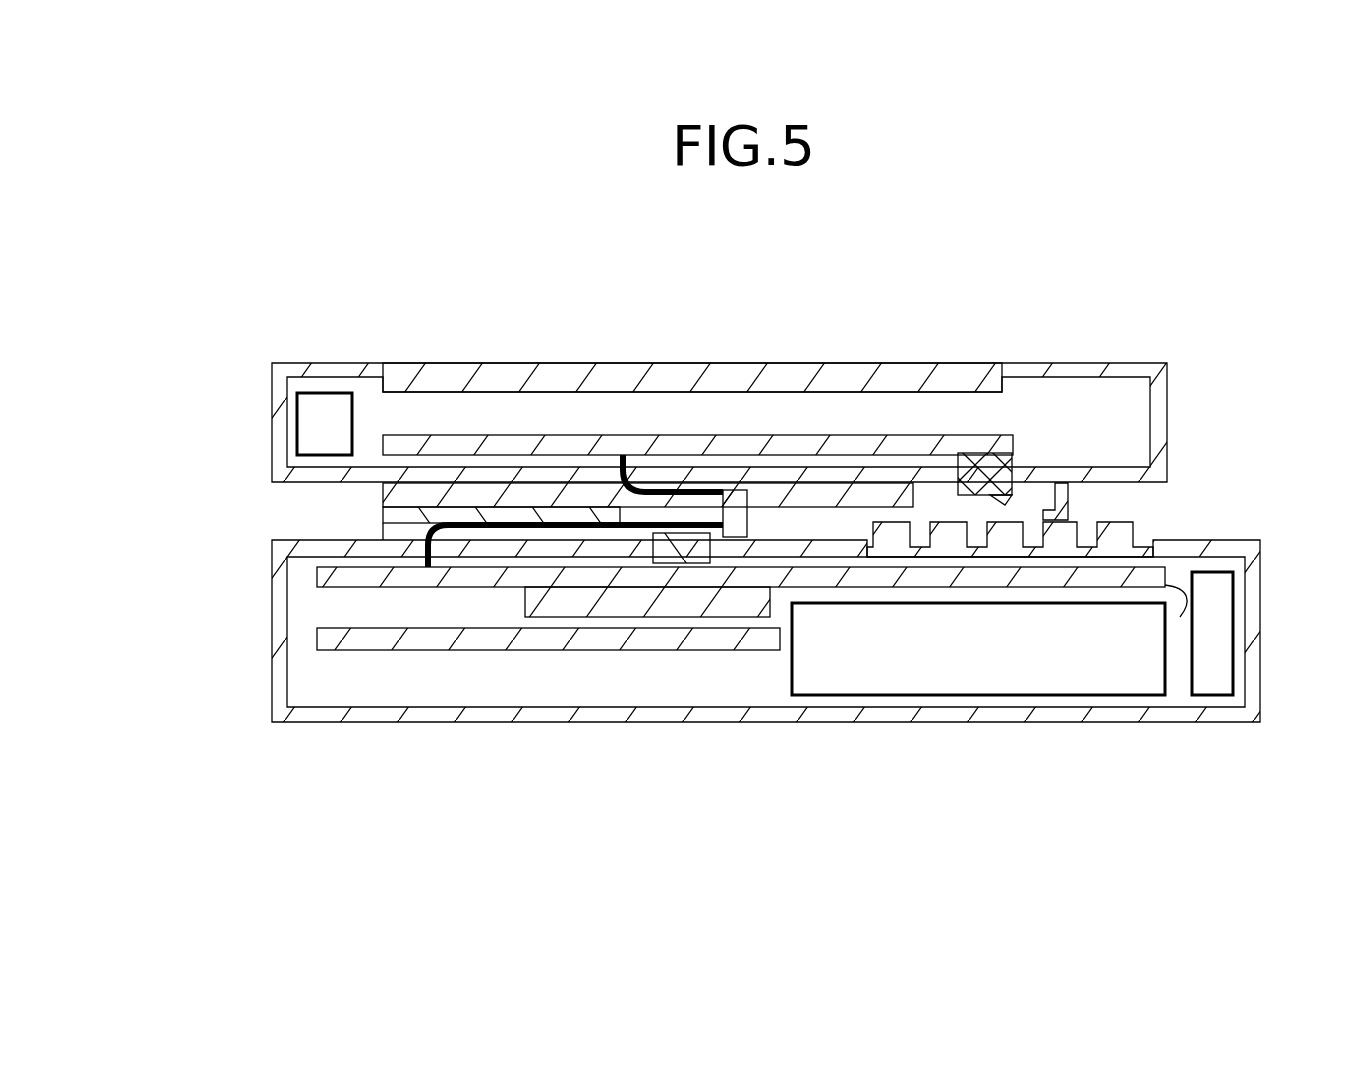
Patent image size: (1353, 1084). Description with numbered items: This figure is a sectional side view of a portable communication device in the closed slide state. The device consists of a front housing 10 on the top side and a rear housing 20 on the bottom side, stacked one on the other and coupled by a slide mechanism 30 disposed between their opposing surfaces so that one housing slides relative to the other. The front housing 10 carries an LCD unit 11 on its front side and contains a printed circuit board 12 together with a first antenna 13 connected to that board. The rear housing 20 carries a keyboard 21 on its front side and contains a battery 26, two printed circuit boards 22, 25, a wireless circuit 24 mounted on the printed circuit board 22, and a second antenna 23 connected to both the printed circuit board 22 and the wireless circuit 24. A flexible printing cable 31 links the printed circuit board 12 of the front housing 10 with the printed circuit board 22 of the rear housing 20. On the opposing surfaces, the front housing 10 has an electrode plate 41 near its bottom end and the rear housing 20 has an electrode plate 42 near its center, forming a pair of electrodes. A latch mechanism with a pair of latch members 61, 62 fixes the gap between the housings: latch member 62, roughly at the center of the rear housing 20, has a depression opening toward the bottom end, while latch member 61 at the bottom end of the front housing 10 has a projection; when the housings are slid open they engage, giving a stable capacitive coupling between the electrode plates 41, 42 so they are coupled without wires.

The front housing 10 is at (353, 363).
The LCD unit 11 is at (985, 363).
The printed circuit board 12 is at (673, 433).
The first antenna 13 is at (307, 428).
The rear housing 20 is at (272, 690).
The keyboard 21 is at (1133, 520).
The printed circuit board 22 is at (317, 570).
The second antenna 23 is at (1215, 665).
The wireless circuit 24 is at (625, 605).
The printed circuit board 25 is at (447, 650).
The battery 26 is at (1000, 663).
The slide mechanism 30 is at (383, 527).
The flexible printing cable 31 is at (713, 490).
The electrode plate 41 is at (1006, 500).
The electrode plate 42 is at (690, 565).
The latch member 61 is at (1075, 500).
The latch member 62 is at (750, 535).